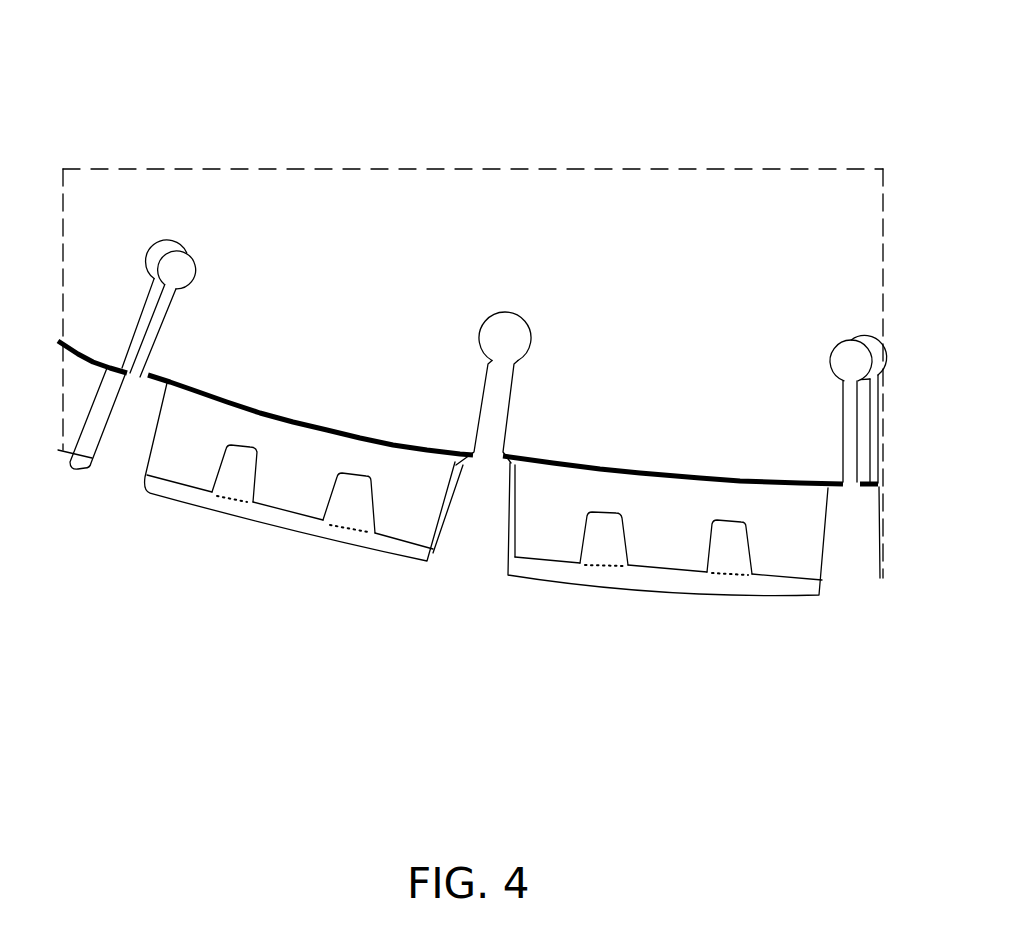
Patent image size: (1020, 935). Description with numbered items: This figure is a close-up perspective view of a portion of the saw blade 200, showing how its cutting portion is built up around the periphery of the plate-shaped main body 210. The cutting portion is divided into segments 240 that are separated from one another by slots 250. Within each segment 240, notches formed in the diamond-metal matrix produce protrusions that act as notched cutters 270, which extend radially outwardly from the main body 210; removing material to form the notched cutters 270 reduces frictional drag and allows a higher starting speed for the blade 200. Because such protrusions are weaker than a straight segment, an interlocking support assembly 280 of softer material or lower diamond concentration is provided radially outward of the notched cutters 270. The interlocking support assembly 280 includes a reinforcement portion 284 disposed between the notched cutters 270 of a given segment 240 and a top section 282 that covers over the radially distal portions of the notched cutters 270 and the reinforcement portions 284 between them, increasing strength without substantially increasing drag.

The blade 200 is at (330, 100).
The main body 210 is at (797, 213).
The segment 240 is at (216, 545).
The slot 250 is at (477, 532).
The notched cutter 270 is at (167, 457).
The interlocking support assembly 280 is at (584, 577).
The top section 282 is at (197, 503).
The reinforcement portion 284 is at (237, 473).